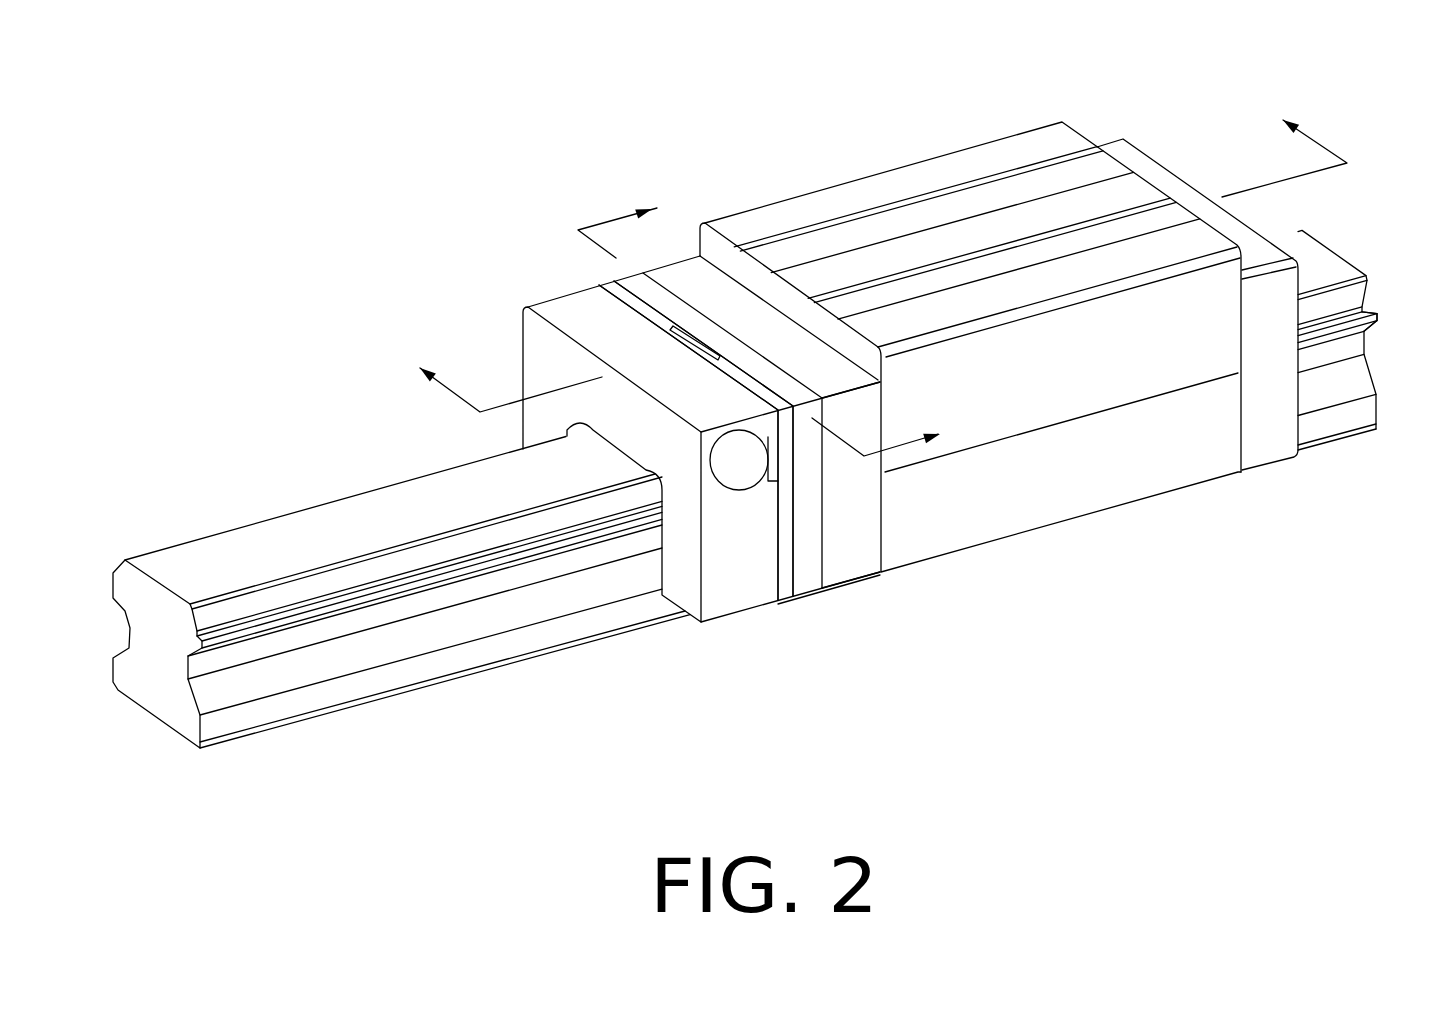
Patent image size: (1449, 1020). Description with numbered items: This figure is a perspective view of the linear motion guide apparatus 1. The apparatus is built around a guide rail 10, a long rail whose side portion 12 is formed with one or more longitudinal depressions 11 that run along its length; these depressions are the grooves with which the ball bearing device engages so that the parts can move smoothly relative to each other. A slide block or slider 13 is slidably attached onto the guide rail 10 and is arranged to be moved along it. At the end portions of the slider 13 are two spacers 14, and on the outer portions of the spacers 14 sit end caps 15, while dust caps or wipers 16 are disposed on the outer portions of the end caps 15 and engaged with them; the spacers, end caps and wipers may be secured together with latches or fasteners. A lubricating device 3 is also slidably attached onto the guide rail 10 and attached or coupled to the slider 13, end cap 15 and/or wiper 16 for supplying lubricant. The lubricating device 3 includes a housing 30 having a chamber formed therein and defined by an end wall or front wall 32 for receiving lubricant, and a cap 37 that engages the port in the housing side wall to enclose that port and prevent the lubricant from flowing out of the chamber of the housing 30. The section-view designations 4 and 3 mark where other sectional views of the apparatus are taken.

The linear motion guide apparatus 1 is at (372, 250).
The lubricating device 3 is at (867, 242).
The section line 4- 4 is at (774, 313).
The guide rail 10 is at (1316, 250).
The longitudinal depressions 11 is at (1350, 297).
The side portion 12 is at (1368, 323).
The slider 13 is at (847, 183).
The spacers 14 is at (870, 522).
The end caps 15 is at (818, 540).
The dust caps or wipers 16 is at (783, 570).
The housing 30 is at (718, 590).
The front wall 32 is at (680, 588).
The cap 37 is at (738, 478).